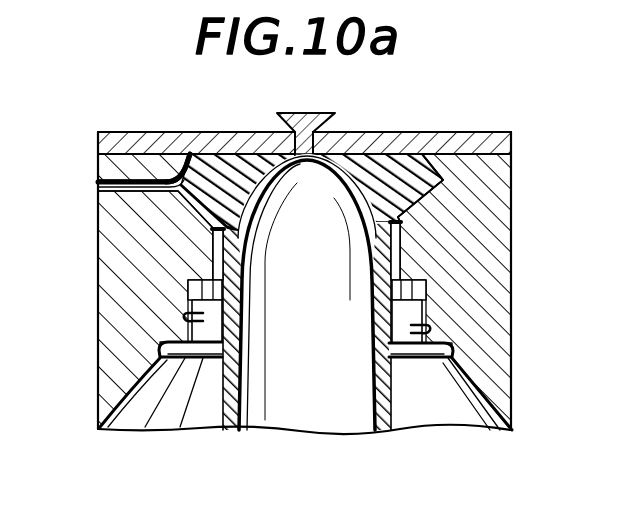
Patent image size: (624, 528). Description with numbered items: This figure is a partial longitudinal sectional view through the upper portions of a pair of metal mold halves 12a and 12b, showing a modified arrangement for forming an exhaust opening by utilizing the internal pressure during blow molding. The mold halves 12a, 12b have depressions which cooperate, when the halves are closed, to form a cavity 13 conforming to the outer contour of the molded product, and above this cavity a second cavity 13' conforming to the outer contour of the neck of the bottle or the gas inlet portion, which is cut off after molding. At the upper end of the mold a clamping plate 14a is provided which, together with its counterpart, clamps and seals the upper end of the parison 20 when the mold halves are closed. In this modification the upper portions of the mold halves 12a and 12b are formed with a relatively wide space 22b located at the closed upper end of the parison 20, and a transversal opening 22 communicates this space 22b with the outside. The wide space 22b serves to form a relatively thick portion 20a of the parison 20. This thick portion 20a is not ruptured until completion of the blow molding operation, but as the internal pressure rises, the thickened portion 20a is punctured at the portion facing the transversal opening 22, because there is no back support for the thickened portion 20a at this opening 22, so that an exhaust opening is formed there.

The clamping plate 14a is at (467, 142).
The thick portion of the parison 20a is at (222, 177).
The transversal opening 22 is at (100, 193).
The wide space 22b is at (165, 170).
The mold half 12b is at (158, 307).
The mold half 12a is at (470, 333).
The parison 20 is at (332, 366).
The second cavity 13' is at (394, 224).
The cavity 13 is at (299, 382).